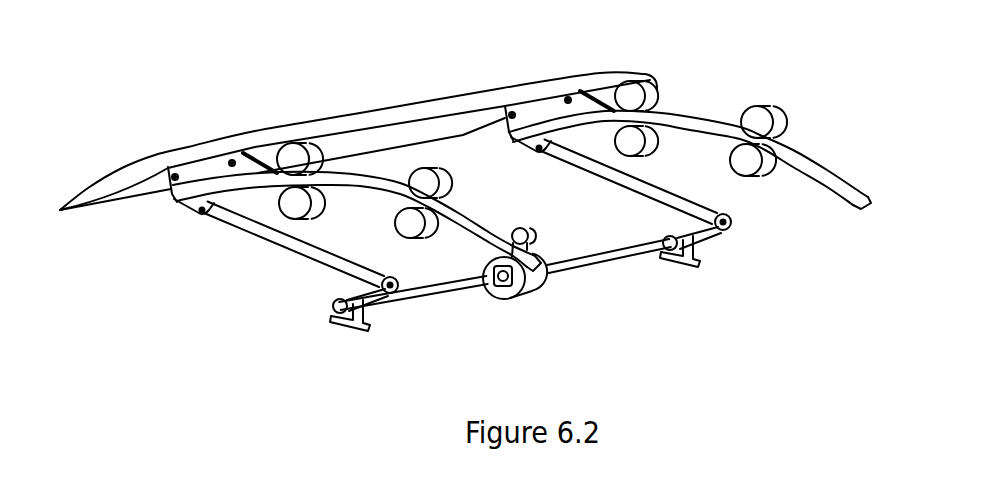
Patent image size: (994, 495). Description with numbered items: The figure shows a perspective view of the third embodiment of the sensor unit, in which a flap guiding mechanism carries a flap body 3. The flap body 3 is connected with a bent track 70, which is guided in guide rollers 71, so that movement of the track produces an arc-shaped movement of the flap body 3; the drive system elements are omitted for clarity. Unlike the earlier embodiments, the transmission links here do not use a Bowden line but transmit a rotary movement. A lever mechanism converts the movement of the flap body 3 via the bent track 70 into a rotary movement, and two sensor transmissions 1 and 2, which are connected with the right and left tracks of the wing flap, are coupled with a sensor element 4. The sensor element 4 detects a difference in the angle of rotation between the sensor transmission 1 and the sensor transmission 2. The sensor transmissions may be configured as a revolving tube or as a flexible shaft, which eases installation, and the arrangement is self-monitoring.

The sensor transmission 1 is at (613, 255).
The sensor transmission 2 is at (425, 293).
The flap body 3 is at (383, 120).
The sensor element 4 is at (553, 320).
The bent track 70 is at (823, 167).
The guide rollers 71 is at (765, 100).